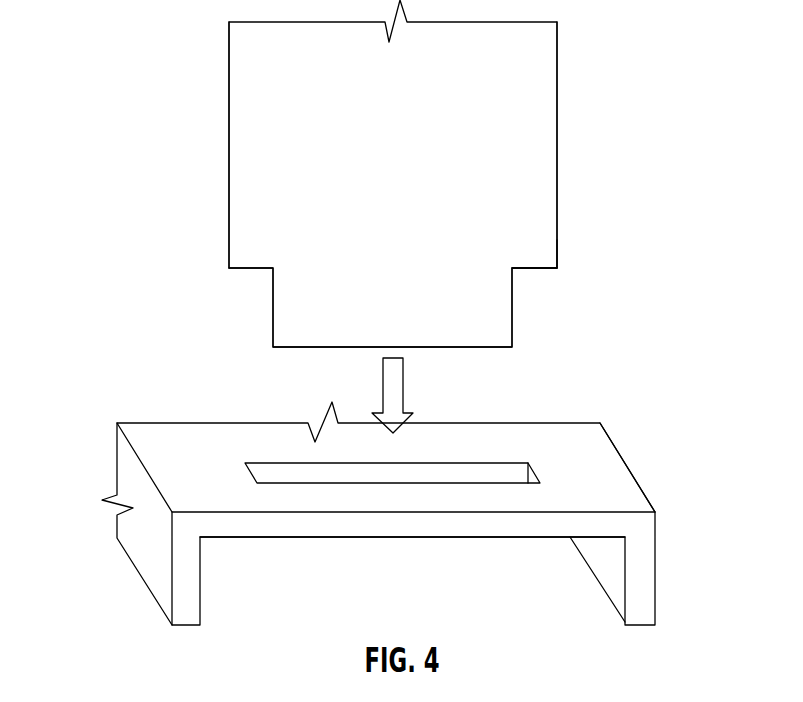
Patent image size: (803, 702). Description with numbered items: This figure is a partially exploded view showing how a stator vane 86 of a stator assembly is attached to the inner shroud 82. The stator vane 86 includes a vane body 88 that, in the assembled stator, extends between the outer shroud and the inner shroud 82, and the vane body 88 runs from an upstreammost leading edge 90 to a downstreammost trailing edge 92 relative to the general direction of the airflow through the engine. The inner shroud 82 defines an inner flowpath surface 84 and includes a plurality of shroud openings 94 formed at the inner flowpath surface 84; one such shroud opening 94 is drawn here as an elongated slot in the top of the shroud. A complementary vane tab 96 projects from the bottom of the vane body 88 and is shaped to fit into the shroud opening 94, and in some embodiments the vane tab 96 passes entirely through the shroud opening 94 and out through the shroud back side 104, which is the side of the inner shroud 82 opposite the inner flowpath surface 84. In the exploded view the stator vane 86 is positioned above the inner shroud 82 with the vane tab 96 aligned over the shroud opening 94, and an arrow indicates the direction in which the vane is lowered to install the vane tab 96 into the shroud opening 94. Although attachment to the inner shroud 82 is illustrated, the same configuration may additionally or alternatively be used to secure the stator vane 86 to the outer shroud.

The inner shroud 82 is at (162, 465).
The inner flowpath surface 84 is at (612, 460).
The stator vane 86 is at (543, 153).
The vane body 88 is at (407, 190).
The leading edge 90 is at (229, 122).
The trailing edge 92 is at (557, 218).
The shroud opening 94 is at (287, 470).
The vane tab 96 is at (282, 315).
The shroud back side 104 is at (412, 538).